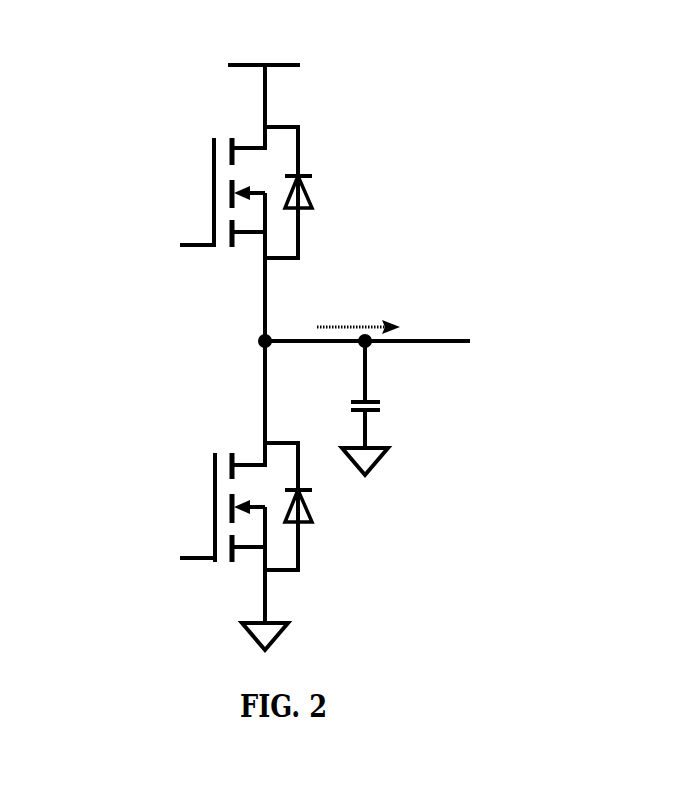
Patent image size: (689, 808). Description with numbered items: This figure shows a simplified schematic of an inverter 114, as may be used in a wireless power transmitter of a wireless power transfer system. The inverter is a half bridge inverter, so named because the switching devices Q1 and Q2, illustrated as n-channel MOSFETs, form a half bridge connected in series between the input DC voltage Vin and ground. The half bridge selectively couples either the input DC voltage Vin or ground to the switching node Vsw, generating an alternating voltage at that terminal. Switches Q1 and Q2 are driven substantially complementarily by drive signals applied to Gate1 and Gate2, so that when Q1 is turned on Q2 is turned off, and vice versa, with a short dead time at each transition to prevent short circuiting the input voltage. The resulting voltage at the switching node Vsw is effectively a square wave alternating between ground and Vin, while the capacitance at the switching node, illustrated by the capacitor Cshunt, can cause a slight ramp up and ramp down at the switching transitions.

The inverter 114 is at (438, 98).
The switching device Q1 is at (297, 234).
The switching device Q2 is at (299, 495).
The capacitor Cshunt is at (432, 408).
The input DC voltage Vin is at (263, 71).
The switching node Vsw is at (315, 327).
The gate drive signal Gate1 is at (153, 238).
The gate drive signal Gate2 is at (155, 553).